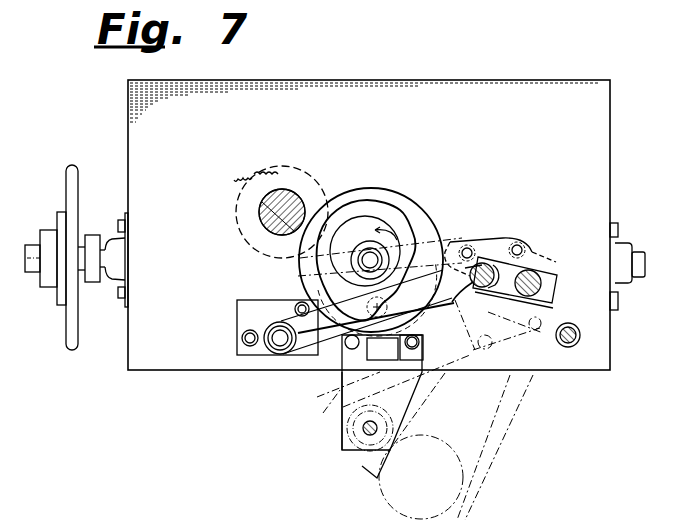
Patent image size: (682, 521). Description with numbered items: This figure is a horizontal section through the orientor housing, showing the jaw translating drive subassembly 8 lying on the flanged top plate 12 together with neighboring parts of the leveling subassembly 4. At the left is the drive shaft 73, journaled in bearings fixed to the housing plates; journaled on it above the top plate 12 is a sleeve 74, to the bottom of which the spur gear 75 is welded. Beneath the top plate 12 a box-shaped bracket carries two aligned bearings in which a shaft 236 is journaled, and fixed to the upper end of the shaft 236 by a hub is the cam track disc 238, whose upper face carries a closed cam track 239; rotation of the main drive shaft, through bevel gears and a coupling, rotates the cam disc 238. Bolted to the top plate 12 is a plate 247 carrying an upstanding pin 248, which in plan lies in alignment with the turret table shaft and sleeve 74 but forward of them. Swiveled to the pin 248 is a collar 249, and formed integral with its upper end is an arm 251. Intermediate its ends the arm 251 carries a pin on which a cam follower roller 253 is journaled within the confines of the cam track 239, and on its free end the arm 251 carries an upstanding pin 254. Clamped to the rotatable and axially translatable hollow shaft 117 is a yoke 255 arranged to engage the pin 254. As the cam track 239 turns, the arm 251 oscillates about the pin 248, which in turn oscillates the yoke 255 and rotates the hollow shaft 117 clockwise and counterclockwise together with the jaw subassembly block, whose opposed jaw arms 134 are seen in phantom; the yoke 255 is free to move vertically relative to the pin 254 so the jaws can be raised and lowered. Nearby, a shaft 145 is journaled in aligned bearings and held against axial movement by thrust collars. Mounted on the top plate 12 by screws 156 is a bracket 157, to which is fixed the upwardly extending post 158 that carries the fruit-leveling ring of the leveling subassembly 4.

The flanged top plate 12 is at (510, 140).
The jaw translating drive subassembly 8 is at (482, 200).
The spur gear 75 is at (250, 182).
The drive shaft 73 is at (282, 209).
The sleeve 74 is at (267, 230).
The cam track disc 238 is at (404, 183).
The cam track 239 is at (407, 218).
The shaft 236 is at (367, 260).
The yoke 255 is at (495, 246).
The hollow shaft 117 is at (548, 273).
The shaft 145 is at (572, 325).
The plate 247 is at (237, 319).
The upstanding pin 248 is at (279, 335).
The collar 249 is at (276, 360).
The arm 251 is at (322, 341).
The cam follower roller 253 is at (370, 329).
The upstanding pin 254 is at (451, 300).
The screws 156 is at (419, 342).
The bracket 157 is at (342, 445).
The post 158 is at (369, 432).
The jaw arms 134 is at (474, 361).
The leveling subassembly 4 is at (290, 437).